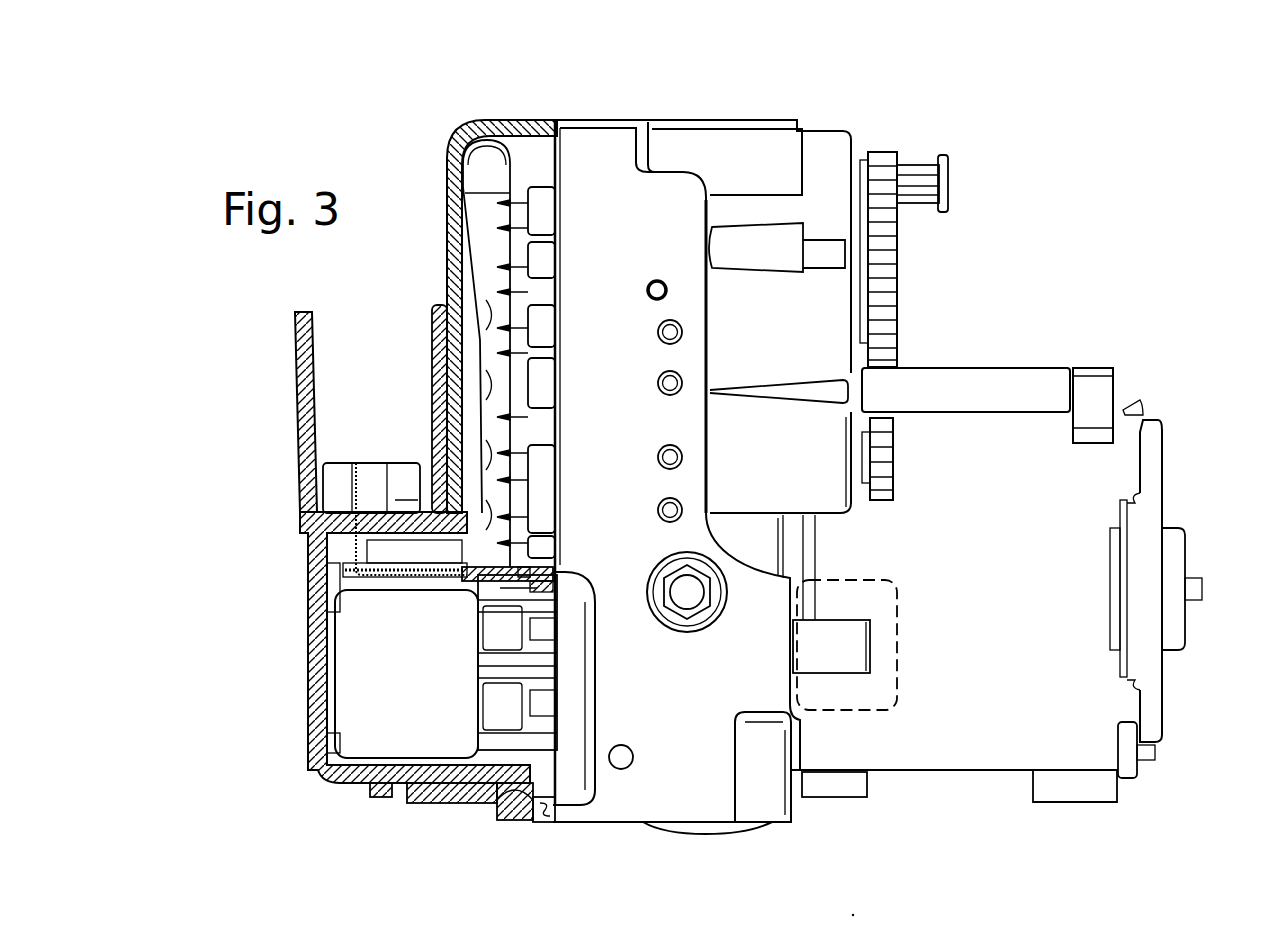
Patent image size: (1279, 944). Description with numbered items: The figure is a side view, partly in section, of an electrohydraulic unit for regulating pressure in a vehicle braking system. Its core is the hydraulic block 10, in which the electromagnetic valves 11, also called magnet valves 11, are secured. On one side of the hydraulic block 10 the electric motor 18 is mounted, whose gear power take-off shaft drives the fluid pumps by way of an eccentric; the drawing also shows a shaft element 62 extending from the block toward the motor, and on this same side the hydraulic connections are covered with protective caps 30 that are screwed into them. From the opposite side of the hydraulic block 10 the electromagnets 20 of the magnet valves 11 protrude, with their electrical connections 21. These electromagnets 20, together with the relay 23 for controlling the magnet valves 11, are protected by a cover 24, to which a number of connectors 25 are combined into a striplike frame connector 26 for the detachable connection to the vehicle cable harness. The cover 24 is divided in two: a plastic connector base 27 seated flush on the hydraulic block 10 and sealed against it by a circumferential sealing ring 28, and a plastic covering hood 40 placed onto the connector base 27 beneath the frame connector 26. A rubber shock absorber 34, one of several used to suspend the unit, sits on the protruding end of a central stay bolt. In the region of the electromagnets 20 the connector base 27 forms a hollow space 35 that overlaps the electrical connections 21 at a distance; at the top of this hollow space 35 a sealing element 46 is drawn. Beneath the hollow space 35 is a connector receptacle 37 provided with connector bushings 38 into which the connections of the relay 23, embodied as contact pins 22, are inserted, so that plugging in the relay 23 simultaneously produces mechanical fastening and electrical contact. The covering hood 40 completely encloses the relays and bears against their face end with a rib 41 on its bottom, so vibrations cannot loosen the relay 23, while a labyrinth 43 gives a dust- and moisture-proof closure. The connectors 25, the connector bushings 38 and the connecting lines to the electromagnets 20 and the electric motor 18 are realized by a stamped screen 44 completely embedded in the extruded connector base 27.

The hydraulic block 10 is at (733, 150).
The electromagnetic valve 11 is at (554, 218).
The electric motor 18 is at (1088, 483).
The electromagnet 20 is at (560, 410).
The electrical connection 21 is at (515, 265).
The contact pin 22 is at (495, 705).
The relay 23 is at (355, 693).
The cover 24 is at (449, 133).
The connector 25 is at (390, 500).
The frame connector 26 is at (333, 504).
The connector base 27 is at (442, 800).
The sealing ring 28 is at (553, 823).
The protective cap 30 is at (897, 293).
The rubber shock absorber 34 is at (897, 645).
The hollow space 35 is at (488, 215).
The connector receptacle 37 is at (600, 773).
The connector bushing 38 is at (535, 690).
The covering hood 40 is at (308, 643).
The rib 41 is at (310, 608).
The labyrinth 43 is at (377, 800).
The stamped screen 44 is at (350, 583).
The seal 46 is at (513, 163).
The shaft 62 is at (865, 393).